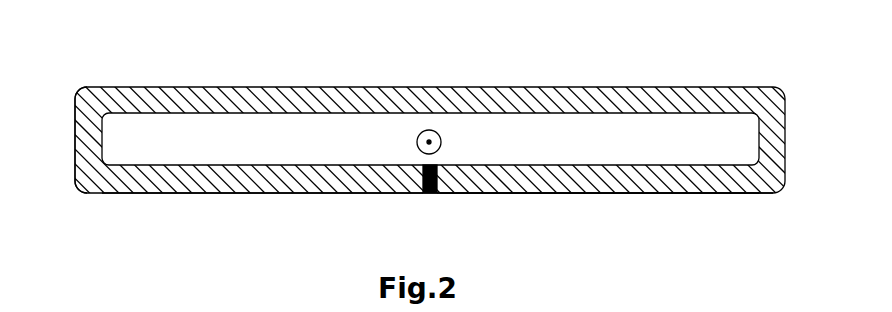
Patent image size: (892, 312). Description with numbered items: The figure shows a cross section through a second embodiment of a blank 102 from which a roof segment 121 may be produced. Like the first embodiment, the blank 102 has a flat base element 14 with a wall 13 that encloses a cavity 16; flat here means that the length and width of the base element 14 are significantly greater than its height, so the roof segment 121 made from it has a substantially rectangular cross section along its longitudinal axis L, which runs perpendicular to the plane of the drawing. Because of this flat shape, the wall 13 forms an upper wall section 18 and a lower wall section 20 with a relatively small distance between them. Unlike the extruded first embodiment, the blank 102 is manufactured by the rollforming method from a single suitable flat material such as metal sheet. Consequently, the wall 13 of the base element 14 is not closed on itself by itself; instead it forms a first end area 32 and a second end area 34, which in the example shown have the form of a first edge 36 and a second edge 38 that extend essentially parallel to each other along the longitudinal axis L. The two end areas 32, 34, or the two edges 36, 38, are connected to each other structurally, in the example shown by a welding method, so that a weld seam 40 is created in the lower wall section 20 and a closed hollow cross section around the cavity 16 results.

The blank 102 is at (94, 71).
The upper wall section 18 is at (561, 92).
The cavity 16 is at (309, 156).
The longitudinal axis L is at (427, 127).
The weld seam 40 is at (427, 195).
The first end area 32 is at (262, 206).
The first edge 36 is at (422, 177).
The second end area 34 is at (598, 207).
The second edge 38 is at (437, 178).
The lower wall section 20 is at (665, 177).
The wall 13 is at (103, 175).
The base element 14 is at (127, 195).
The roof segment 121 is at (51, 297).